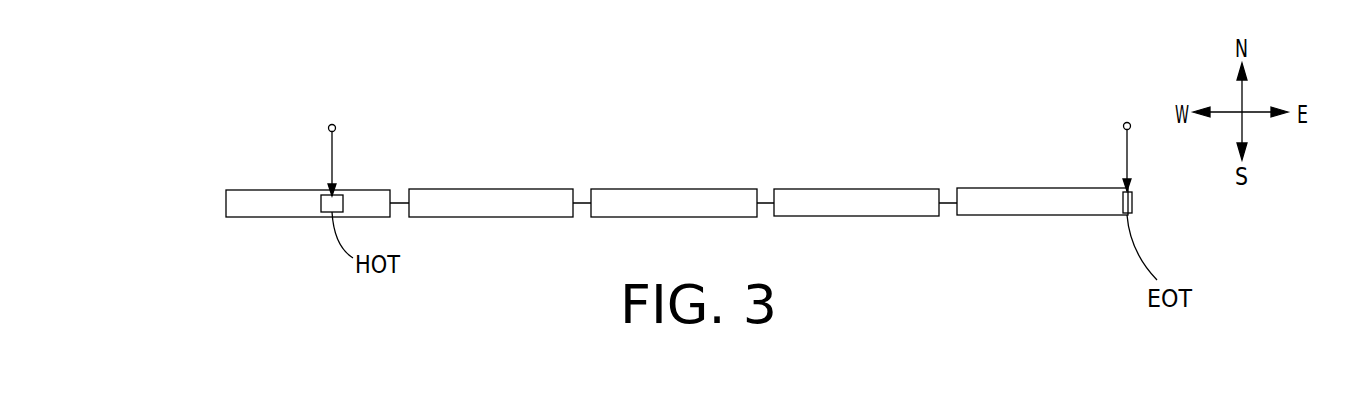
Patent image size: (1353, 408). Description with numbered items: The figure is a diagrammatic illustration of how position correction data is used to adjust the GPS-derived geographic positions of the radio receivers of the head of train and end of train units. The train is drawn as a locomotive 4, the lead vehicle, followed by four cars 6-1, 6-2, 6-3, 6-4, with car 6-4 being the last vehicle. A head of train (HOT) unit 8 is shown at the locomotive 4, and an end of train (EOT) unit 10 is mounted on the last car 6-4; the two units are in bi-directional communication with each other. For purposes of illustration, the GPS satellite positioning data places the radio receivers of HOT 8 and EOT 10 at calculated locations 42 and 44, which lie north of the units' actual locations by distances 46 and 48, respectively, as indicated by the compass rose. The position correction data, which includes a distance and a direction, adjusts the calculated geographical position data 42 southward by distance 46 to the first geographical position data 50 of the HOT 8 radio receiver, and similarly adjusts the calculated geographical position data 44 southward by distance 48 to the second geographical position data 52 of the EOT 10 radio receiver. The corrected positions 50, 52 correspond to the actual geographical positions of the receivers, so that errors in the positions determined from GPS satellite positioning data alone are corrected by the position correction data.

The locomotive 4 is at (245, 208).
The car 6-1 is at (468, 188).
The car 6-2 is at (667, 188).
The car 6-3 is at (877, 188).
The car 6-4 is at (997, 188).
The head of train unit 8 is at (344, 201).
The end of train unit 10 is at (1133, 203).
The calculated geographical position data of HOT 42 is at (332, 125).
The calculated geographical position data of EOT 44 is at (1127, 123).
The distance 46 is at (332, 160).
The distance 48 is at (1127, 157).
The first geographical position data 50 is at (321, 208).
The second geographical position data 52 is at (1123, 208).